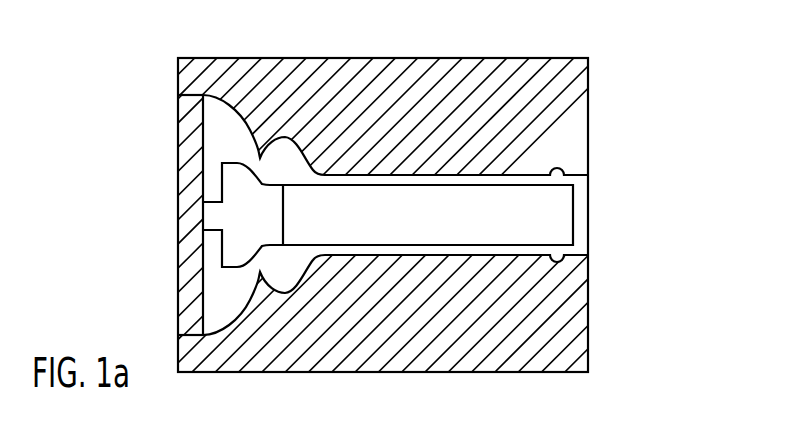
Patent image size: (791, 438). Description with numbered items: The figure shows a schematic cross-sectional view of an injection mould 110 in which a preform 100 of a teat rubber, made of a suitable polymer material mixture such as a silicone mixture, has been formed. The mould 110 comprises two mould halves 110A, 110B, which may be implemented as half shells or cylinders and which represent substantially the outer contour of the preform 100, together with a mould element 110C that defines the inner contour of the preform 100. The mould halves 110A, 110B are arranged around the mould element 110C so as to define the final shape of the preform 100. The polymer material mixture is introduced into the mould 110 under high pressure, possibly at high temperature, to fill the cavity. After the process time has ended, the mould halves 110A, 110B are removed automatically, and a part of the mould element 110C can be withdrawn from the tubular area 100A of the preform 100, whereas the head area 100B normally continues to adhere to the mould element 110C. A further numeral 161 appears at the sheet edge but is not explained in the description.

The injection mould 110 is at (615, 55).
The mould half 110A is at (590, 100).
The mould half 110B is at (590, 312).
The mould element 110C is at (578, 229).
The preform 100 is at (607, 211).
The tubular area 100A is at (428, 178).
The head area 100B is at (253, 135).
The element 161 (partially visible) 161 is at (250, 430).